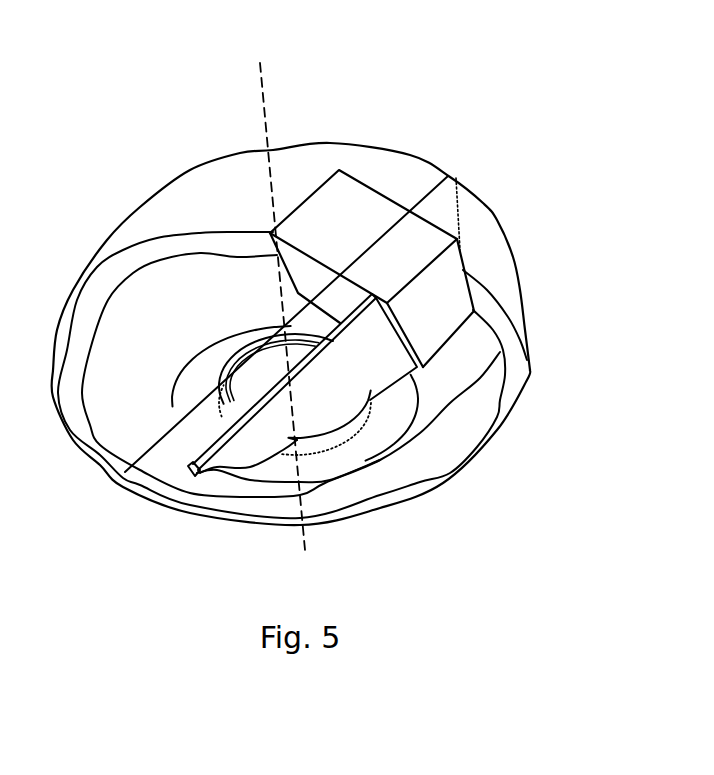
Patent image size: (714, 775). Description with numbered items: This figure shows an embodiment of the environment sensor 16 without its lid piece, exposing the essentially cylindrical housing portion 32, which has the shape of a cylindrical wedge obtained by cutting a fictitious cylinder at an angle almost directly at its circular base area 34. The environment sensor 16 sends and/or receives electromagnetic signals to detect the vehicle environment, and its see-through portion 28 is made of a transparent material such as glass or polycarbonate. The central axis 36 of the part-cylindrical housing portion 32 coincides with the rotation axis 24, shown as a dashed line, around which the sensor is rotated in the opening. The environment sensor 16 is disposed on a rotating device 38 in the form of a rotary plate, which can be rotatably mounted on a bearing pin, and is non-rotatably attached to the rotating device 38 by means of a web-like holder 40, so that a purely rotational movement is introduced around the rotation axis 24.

The environment sensor 16 is at (350, 207).
The rotation axis 24 is at (268, 130).
The see-through portion 28 is at (517, 350).
The housing portion 32 is at (410, 153).
The circular base area 34 is at (409, 503).
The central axis 36 is at (290, 148).
The rotating device 38 is at (197, 428).
The web-like holder 40 is at (286, 326).